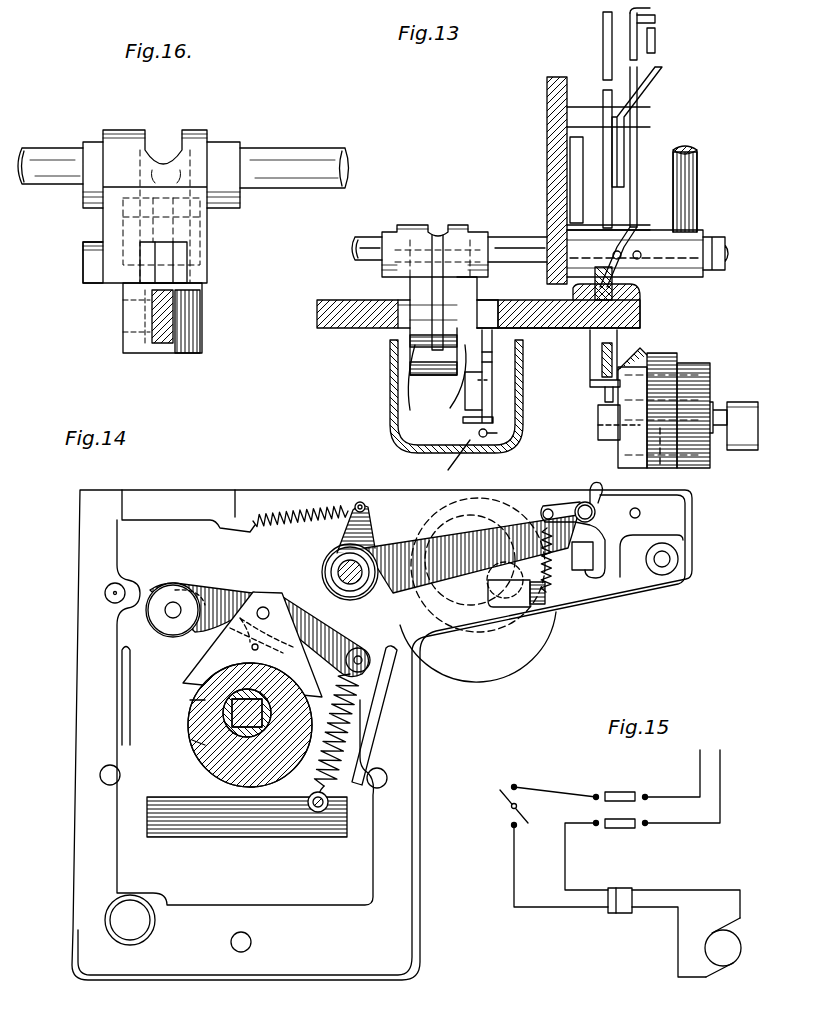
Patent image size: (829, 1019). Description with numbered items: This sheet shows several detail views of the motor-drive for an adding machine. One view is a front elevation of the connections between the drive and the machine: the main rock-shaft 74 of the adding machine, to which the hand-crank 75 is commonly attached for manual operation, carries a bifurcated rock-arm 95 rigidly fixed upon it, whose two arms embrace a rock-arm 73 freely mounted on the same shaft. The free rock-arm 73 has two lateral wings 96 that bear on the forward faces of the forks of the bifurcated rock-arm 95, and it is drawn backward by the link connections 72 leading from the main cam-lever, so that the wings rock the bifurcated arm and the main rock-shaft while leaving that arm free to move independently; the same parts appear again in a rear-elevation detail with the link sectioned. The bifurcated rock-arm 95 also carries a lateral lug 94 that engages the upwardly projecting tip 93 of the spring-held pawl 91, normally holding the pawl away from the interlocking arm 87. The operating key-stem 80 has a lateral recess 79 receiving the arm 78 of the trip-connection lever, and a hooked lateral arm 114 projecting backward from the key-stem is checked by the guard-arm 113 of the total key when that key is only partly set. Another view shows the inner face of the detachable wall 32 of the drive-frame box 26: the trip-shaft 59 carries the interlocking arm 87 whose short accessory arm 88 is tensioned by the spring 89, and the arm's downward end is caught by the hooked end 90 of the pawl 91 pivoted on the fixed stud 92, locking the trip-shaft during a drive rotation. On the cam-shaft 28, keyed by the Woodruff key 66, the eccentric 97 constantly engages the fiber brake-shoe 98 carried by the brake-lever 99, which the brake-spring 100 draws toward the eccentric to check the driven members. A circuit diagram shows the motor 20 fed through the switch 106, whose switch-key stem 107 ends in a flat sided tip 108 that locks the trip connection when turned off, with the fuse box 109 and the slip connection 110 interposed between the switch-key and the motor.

In FIG. 15, the electric motor 20 is at (740, 940).
In FIG. 13, the drive-frame box 26 is at (390, 388).
In FIG. 14, the cam-shaft 28 is at (225, 735).
In FIG. 13, the detachable wall 32 is at (562, 332).
In FIG. 14, the detachable wall 32 is at (78, 670).
In FIG. 14, the trip-shaft 59 is at (356, 572).
In FIG. 14, the Woodruff key 66 is at (300, 692).
In FIG. 16, the link connections 72 is at (165, 353).
In FIG. 13, the link connections 72 is at (435, 413).
In FIG. 16, the rock-arm 73 is at (188, 350).
In FIG. 13, the rock-arm 73 is at (435, 355).
In FIG. 16, the main rock-shaft 74 is at (280, 157).
In FIG. 13, the main rock-shaft 74 is at (512, 237).
In FIG. 13, the hand-crank 75 is at (698, 178).
In FIG. 13, the arm 78 is at (612, 360).
In FIG. 13, the lateral recess 79 is at (593, 385).
In FIG. 13, the operating key-stem 80 is at (600, 388).
In FIG. 13, the interlocking arm 87 is at (466, 418).
In FIG. 14, the interlocking arm 87 is at (471, 590).
In FIG. 14, the accessory arm 88 is at (366, 503).
In FIG. 14, the spring 89 is at (300, 510).
In FIG. 13, the hooked end 90 is at (453, 464).
In FIG. 14, the hooked end 90 is at (583, 573).
In FIG. 13, the spring-held pawl 91 is at (495, 437).
In FIG. 14, the spring-held pawl 91 is at (598, 525).
In FIG. 13, the fixed stud 92 is at (482, 358).
In FIG. 14, the fixed stud 92 is at (573, 504).
In FIG. 13, the upwardly projecting tip 93 is at (483, 332).
In FIG. 14, the upwardly projecting tip 93 is at (596, 482).
In FIG. 16, the lateral lug 94 is at (90, 262).
In FIG. 13, the lateral lug 94 is at (498, 292).
In FIG. 16, the bifurcated rock-arm 95 is at (210, 130).
In FIG. 13, the bifurcated rock-arm 95 is at (470, 227).
In FIG. 16, the lateral wings 96 is at (140, 270).
In FIG. 13, the lateral wings 96 is at (457, 286).
In FIG. 14, the eccentric 97 is at (195, 712).
In FIG. 14, the fiber brake-shoe 98 is at (276, 644).
In FIG. 14, the brake-lever 99 is at (292, 592).
In FIG. 14, the brake-spring 100 is at (395, 702).
In FIG. 13, the switch 106 is at (720, 400).
In FIG. 15, the switch 106 is at (505, 812).
In FIG. 13, the switch-key stem 107 is at (662, 435).
In FIG. 15, the switch-key stem 107 is at (520, 806).
In FIG. 13, the flat sided tip 108 is at (598, 430).
In FIG. 15, the fuse box 109 is at (617, 828).
In FIG. 15, the slip connection 110 is at (617, 915).
In FIG. 13, the guard-arm 113 is at (657, 32).
In FIG. 13, the hooked lateral arm 114 is at (657, 18).